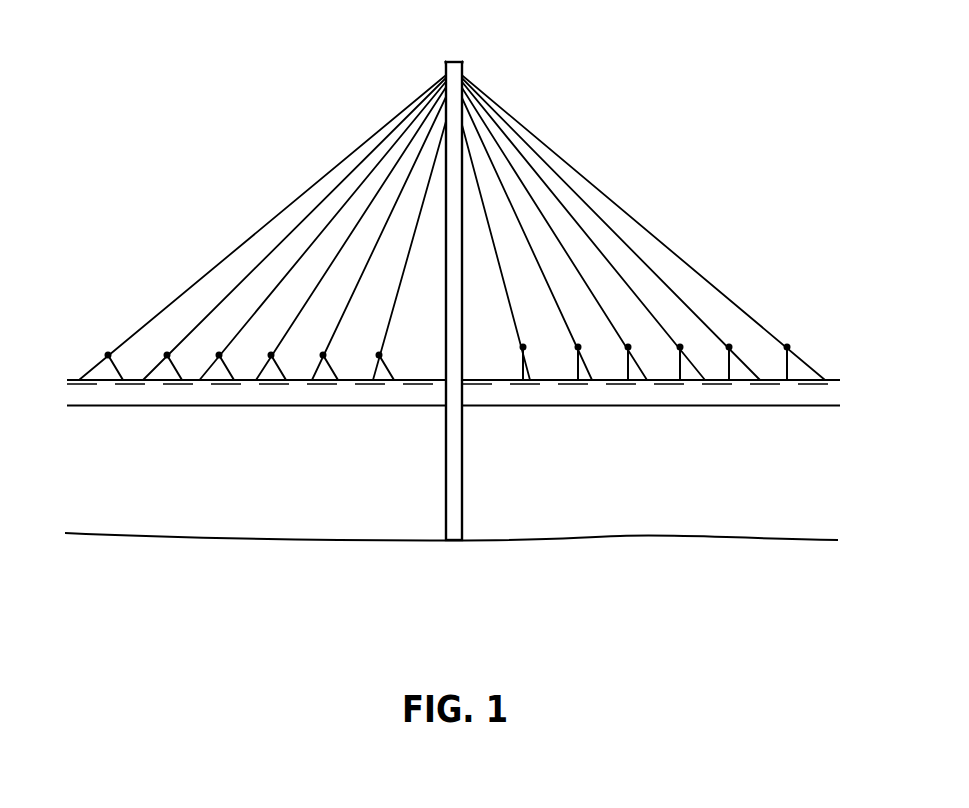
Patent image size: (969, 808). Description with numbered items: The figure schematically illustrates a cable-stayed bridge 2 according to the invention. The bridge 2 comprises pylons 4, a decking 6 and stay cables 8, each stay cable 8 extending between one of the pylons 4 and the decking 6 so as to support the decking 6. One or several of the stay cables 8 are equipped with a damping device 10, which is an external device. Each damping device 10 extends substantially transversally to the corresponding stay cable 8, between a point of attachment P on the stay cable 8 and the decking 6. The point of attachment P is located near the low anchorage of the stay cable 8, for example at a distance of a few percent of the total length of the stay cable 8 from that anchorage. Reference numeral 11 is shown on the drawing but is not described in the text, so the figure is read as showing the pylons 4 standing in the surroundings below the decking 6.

The cable-stayed bridge 2 is at (254, 135).
The pylon 4 is at (452, 478).
The decking 6 is at (570, 393).
The stay cable 8 is at (626, 202).
The damping device 10 is at (327, 362).
The point of attachment P is at (680, 347).
The water surface 11 is at (712, 468).